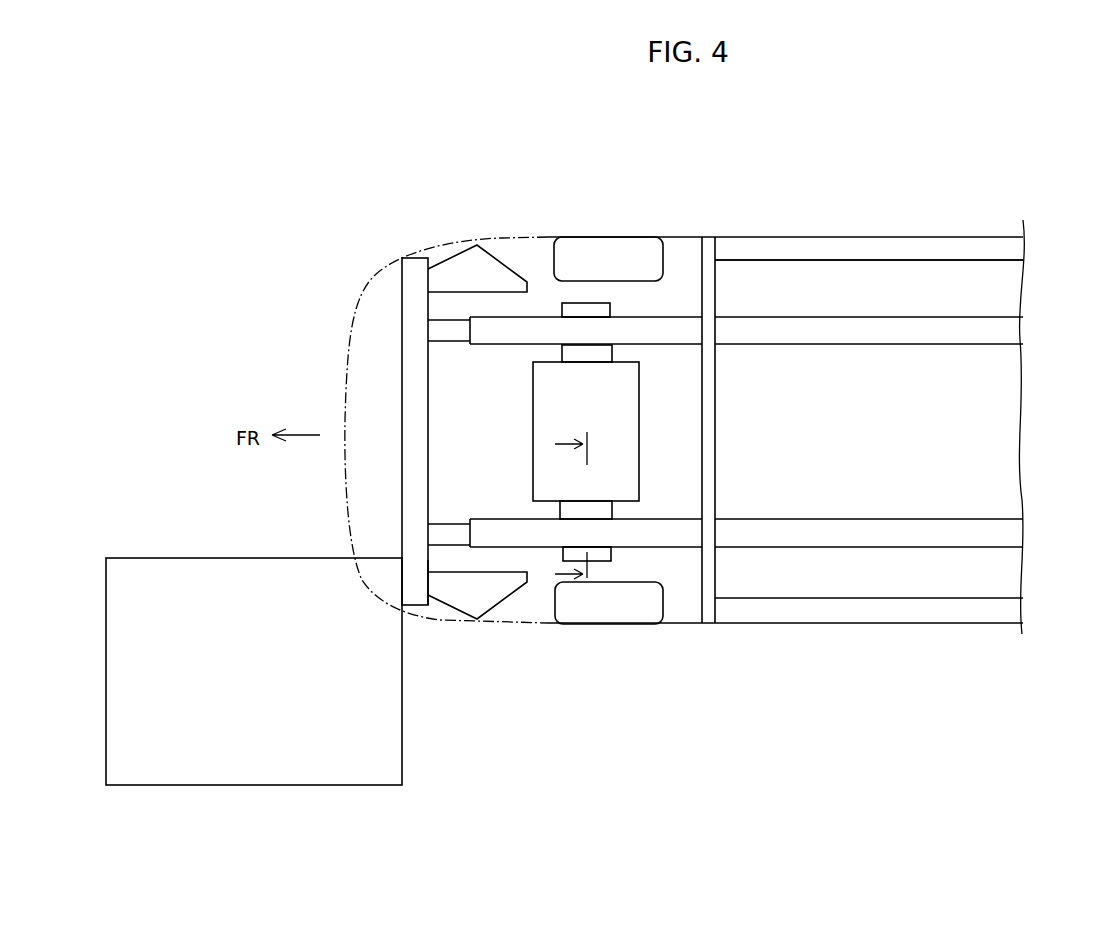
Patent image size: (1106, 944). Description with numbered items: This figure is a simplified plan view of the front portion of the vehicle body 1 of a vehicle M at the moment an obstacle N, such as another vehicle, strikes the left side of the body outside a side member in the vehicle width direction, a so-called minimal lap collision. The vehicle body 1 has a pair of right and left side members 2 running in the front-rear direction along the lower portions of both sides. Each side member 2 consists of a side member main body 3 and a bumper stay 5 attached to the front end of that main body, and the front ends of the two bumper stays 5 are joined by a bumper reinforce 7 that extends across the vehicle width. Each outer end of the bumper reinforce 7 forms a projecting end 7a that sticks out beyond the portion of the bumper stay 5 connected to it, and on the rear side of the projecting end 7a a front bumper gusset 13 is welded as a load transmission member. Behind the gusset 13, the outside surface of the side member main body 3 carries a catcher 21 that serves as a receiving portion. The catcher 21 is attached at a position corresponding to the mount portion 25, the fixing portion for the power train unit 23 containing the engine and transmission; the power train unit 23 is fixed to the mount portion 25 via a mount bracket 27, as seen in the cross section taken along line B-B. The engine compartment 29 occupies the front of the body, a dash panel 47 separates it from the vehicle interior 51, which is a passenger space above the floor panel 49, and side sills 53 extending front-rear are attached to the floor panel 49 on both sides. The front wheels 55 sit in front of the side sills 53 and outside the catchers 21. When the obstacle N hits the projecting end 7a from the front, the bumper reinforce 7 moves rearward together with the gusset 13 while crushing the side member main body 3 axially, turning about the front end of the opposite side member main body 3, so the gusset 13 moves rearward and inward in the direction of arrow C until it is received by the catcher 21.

The vehicle body 1 is at (826, 233).
The side member 2 is at (775, 313).
The side member main body 3 is at (684, 328).
The bumper stay 5 is at (442, 326).
The bumper reinforce 7 is at (414, 525).
The projecting end 7a is at (415, 586).
The front bumper gusset 13 is at (484, 262).
The catcher 21 is at (570, 305).
The power train unit 23 is at (533, 383).
The mount portion 25 is at (587, 328).
The mount bracket 27 is at (612, 352).
The engine compartment 29 is at (473, 450).
The dash panel 47 is at (716, 392).
The floor panel 49 is at (1022, 287).
The vehicle interior 51 is at (889, 417).
The side sill 53 is at (903, 240).
The front wheel 55 is at (636, 240).
The line B- B is at (562, 509).
The arrow C is at (559, 547).
The vehicle M is at (348, 343).
The obstacle N is at (178, 565).